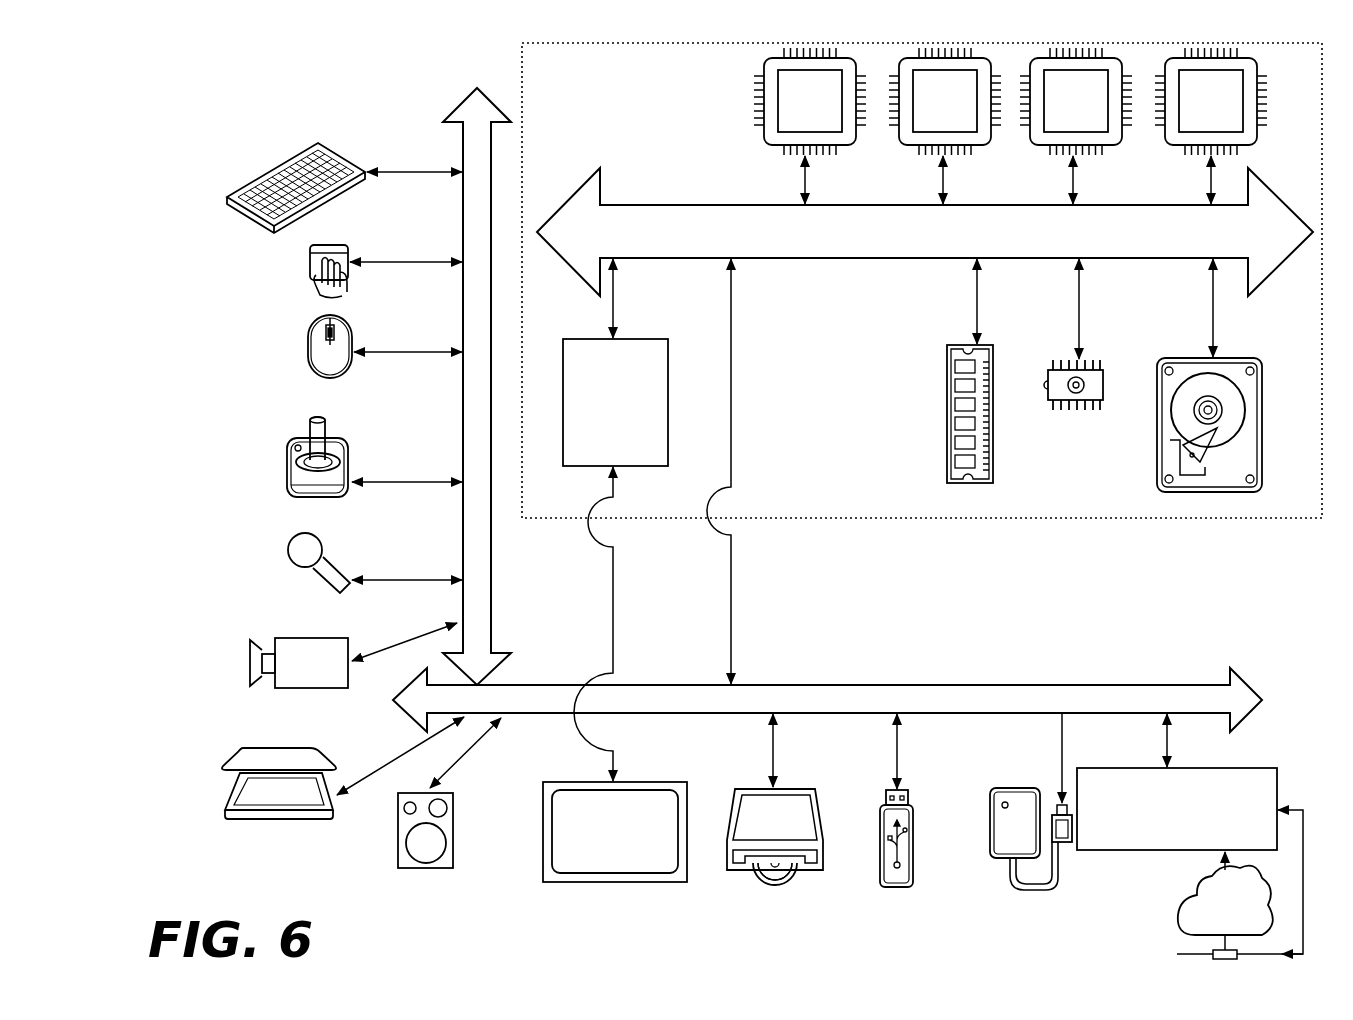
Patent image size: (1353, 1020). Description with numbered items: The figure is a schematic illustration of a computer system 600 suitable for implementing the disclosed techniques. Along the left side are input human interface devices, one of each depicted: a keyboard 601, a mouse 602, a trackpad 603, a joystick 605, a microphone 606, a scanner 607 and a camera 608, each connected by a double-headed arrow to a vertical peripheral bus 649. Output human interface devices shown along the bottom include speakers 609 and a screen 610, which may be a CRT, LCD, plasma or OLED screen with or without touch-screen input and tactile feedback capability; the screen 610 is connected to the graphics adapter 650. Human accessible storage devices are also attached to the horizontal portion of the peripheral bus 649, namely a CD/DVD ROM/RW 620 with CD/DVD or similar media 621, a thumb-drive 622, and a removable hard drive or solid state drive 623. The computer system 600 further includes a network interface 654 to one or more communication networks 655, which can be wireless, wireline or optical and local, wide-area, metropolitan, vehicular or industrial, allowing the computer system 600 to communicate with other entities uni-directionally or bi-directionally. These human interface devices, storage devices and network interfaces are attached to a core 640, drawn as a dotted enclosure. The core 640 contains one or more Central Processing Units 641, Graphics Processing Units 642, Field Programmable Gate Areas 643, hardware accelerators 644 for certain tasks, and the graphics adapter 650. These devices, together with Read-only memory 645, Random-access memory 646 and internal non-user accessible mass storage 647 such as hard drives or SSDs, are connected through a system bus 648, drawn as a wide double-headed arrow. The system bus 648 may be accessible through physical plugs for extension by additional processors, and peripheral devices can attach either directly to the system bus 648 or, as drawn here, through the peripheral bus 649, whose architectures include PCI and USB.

The computer system 600 is at (272, 126).
The keyboard 601 is at (227, 198).
The mouse 602 is at (308, 345).
The trackpad 603 is at (310, 265).
The joystick 605 is at (287, 478).
The microphone 606 is at (290, 548).
The scanner 607 is at (225, 806).
The camera 608 is at (250, 663).
The speakers 609 is at (428, 869).
The touch screen 610 is at (612, 883).
The CD/DVD ROM/RW 620 is at (818, 878).
The CD/DVD media 621 is at (756, 886).
The thumb-drive 622 is at (898, 888).
The removable hard drive or solid state drive 623 is at (998, 862).
The core 640 is at (915, 520).
The Central Processing Unit 641 is at (795, 125).
The Graphics Processing Unit 642 is at (930, 125).
The Field Programmable Gate Area 643 is at (1061, 125).
The hardware accelerator 644 is at (1196, 125).
The Read-only memory 645 is at (1070, 412).
The Random-access memory 646 is at (947, 445).
The internal mass storage 647 is at (1163, 358).
The system bus 648 is at (995, 243).
The peripheral bus 649 is at (462, 135).
The graphics adapter 650 is at (600, 441).
The network interface 654 is at (1162, 837).
The communication network 655 is at (1178, 920).